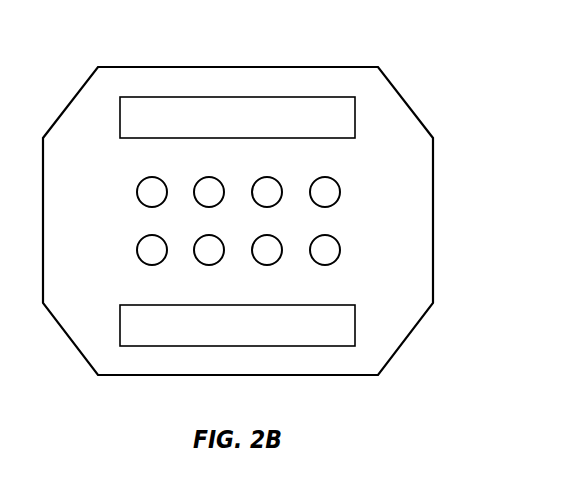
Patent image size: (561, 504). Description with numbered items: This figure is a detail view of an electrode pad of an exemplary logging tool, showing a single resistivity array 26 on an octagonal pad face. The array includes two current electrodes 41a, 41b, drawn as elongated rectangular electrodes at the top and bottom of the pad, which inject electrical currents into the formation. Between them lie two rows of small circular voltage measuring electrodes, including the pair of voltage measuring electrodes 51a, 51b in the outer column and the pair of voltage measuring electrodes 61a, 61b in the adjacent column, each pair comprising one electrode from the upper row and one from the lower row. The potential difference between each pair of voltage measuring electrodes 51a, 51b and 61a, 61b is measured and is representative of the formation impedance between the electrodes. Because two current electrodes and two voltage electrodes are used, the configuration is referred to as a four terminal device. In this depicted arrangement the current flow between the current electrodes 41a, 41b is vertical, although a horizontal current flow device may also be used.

The resistivity array 26 is at (360, 42).
The current electrode 41a is at (355, 125).
The current electrode 41b is at (355, 320).
The voltage measuring electrode 51a is at (150, 265).
The voltage measuring electrode 51b is at (150, 177).
The voltage measuring electrode 61a is at (210, 265).
The voltage measuring electrode 61b is at (210, 177).